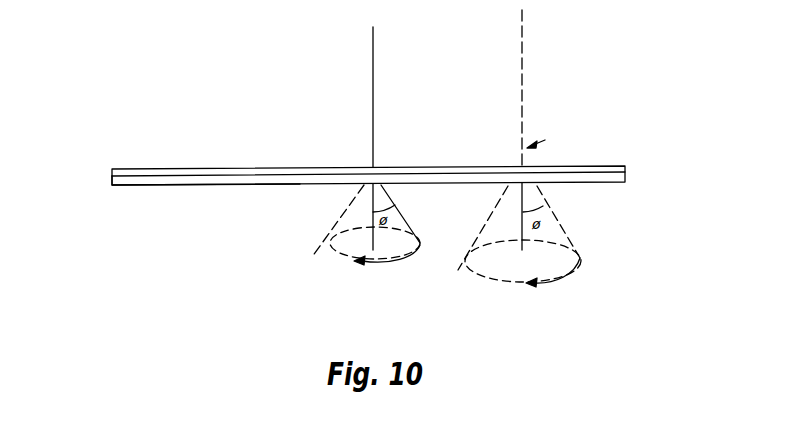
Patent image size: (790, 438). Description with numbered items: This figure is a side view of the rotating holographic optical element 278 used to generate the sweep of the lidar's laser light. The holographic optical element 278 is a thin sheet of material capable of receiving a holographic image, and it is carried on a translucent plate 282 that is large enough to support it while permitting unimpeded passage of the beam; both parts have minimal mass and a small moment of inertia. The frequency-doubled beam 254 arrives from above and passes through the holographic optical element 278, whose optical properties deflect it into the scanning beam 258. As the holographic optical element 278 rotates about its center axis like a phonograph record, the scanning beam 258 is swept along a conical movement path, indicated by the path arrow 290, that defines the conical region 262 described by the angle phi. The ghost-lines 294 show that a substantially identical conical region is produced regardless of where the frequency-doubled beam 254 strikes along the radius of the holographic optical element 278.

The frequency-doubled beam 254 is at (373, 100).
The scanning beam 258 is at (410, 220).
The conical region 262 is at (353, 209).
The holographic optical element 278 is at (625, 167).
The translucent plate 282 is at (120, 182).
The path arrow 290 is at (377, 264).
The ghost-lines 294 is at (545, 140).